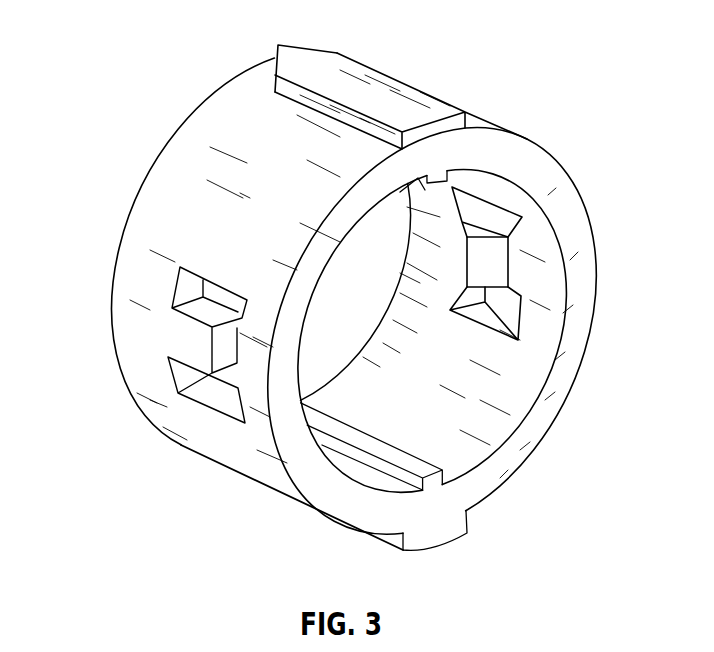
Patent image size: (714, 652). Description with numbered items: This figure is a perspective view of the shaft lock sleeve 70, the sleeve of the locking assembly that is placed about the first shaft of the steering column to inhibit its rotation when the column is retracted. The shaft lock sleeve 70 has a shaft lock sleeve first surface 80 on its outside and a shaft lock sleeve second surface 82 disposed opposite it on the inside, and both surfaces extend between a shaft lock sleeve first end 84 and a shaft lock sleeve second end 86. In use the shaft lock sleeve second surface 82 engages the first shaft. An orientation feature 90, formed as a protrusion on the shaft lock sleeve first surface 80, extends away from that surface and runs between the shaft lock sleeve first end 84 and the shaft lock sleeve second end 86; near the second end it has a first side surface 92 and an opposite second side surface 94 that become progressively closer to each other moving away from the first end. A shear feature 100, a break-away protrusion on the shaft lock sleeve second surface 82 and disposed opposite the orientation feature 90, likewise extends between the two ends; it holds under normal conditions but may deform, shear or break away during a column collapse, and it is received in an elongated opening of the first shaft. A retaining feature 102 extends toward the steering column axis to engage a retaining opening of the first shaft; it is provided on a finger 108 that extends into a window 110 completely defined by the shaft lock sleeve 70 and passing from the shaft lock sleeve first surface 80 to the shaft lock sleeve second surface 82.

The shaft lock sleeve 70 is at (588, 45).
The shaft lock sleeve first surface 80 is at (226, 448).
The shaft lock sleeve second surface 82 is at (457, 413).
The shaft lock sleeve first end 84 is at (543, 418).
The shaft lock sleeve second end 86 is at (113, 317).
The orientation feature 90 is at (403, 72).
The first side surface 92 is at (305, 48).
The second side surface 94 is at (275, 62).
The shear feature 100 is at (428, 163).
The retaining feature 102 is at (495, 255).
The finger 108 is at (498, 226).
The window 110 is at (490, 316).